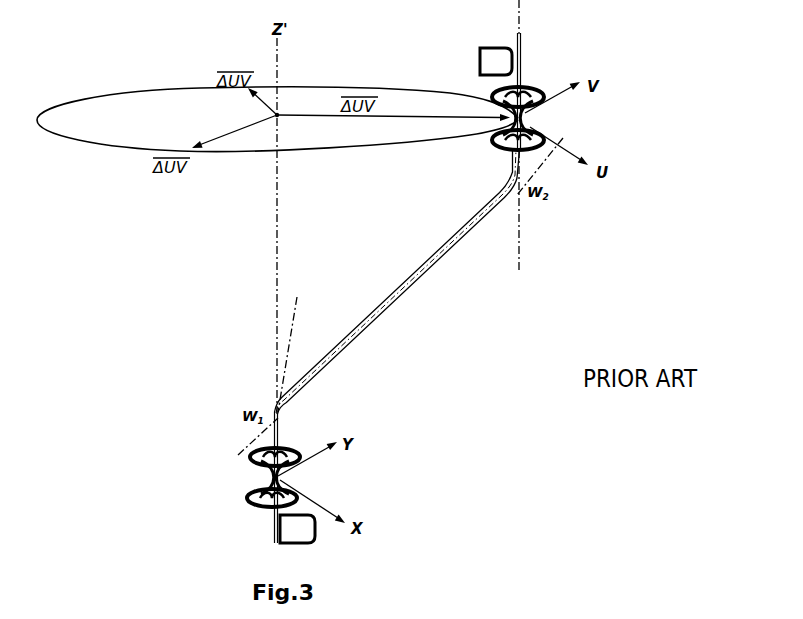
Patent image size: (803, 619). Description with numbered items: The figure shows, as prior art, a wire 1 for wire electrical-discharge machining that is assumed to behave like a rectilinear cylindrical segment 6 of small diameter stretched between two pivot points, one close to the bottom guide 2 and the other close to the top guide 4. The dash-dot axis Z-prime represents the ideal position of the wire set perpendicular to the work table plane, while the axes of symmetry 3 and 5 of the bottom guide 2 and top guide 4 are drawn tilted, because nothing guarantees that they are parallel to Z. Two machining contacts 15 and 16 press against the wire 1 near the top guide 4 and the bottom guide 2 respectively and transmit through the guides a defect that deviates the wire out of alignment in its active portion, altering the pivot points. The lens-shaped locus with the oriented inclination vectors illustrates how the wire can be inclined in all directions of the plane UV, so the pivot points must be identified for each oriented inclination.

The wire 1 is at (521, 68).
The bottom guide 2 is at (248, 452).
The axis of symmetry 3 is at (293, 323).
The top guide 4 is at (545, 82).
The axis of symmetry 5 is at (520, 273).
The rectilinear cylindrical segment 6 is at (403, 298).
The machining contact 15 is at (480, 70).
The machining contact 16 is at (303, 545).